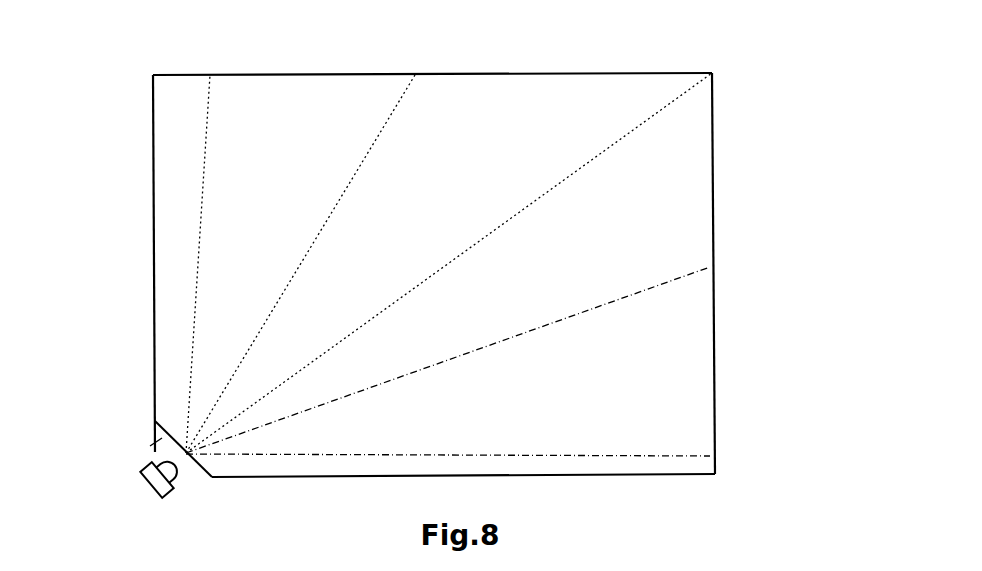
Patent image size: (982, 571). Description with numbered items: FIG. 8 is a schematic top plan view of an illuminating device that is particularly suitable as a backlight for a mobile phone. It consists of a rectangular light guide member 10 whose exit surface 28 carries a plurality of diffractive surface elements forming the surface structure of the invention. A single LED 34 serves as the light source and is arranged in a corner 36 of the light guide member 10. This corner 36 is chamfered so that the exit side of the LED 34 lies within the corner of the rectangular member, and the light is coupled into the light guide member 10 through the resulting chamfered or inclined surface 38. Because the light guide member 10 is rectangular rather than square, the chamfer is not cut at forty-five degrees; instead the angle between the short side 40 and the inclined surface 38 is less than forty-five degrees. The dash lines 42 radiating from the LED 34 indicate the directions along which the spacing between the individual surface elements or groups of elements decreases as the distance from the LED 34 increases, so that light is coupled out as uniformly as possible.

The light guide member 10 is at (760, 91).
The exit surface 28 is at (665, 347).
The LED 34 is at (150, 479).
The corner 36 is at (130, 419).
The inclined surface 38 is at (200, 482).
The short side 40 is at (152, 187).
The dash lines 42 is at (207, 145).